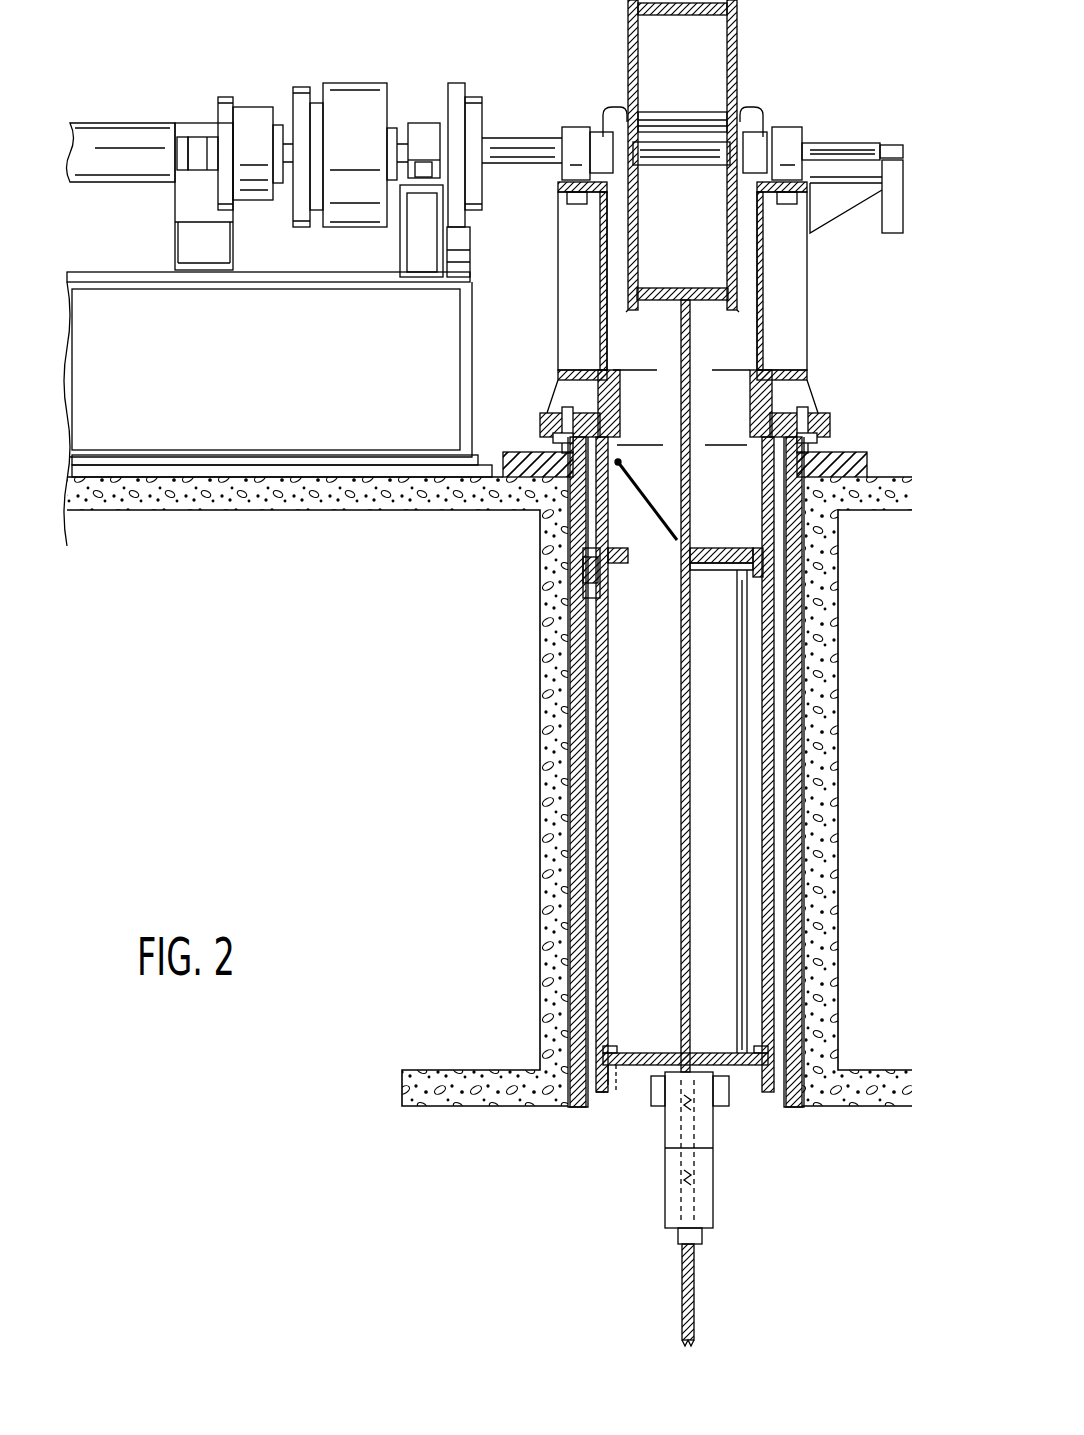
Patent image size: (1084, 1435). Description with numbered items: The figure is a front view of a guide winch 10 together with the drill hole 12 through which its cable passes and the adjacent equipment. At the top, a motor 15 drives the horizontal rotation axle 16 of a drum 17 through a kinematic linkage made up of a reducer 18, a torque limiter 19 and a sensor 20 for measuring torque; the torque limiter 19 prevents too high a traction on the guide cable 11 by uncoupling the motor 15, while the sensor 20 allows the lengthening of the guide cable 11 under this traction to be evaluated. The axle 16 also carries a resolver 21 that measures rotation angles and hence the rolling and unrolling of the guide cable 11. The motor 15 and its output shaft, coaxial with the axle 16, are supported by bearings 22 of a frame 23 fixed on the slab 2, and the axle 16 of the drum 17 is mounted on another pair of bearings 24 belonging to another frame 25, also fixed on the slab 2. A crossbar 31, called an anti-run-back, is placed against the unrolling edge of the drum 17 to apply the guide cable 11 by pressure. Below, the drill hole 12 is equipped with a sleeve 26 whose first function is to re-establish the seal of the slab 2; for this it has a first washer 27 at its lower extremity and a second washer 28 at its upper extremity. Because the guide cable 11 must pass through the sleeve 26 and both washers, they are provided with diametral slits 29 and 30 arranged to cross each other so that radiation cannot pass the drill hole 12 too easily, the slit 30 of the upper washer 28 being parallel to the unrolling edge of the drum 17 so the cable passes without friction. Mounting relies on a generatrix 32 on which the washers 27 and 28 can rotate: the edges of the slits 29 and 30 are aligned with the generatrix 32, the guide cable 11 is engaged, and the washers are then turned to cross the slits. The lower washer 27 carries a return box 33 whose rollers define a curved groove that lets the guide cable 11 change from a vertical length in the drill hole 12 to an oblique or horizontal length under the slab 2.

The slab 2 is at (449, 1082).
The guide winch 10 is at (498, 72).
The guide cable 11 is at (683, 787).
The drill hole 12 is at (608, 895).
The motor 15 is at (110, 153).
The horizontal rotation axle 16 is at (838, 150).
The drum 17 is at (628, 45).
The reducer 18 is at (257, 125).
The torque limiter 19 is at (350, 117).
The sensor 20 is at (473, 185).
The resolver 21 is at (900, 165).
The bearings 22 is at (197, 140).
The frame 23 is at (122, 440).
The bearings 24 is at (578, 140).
The frame 25 is at (787, 300).
The sleeve 26 is at (612, 808).
The first washer 27 is at (640, 1075).
The second washer 28 is at (717, 547).
The diametral slit 29 is at (682, 1057).
The diametral slit 30 is at (613, 592).
The crossbar 31 is at (712, 118).
The generatrix 32 is at (745, 755).
The return box 33 is at (668, 1240).